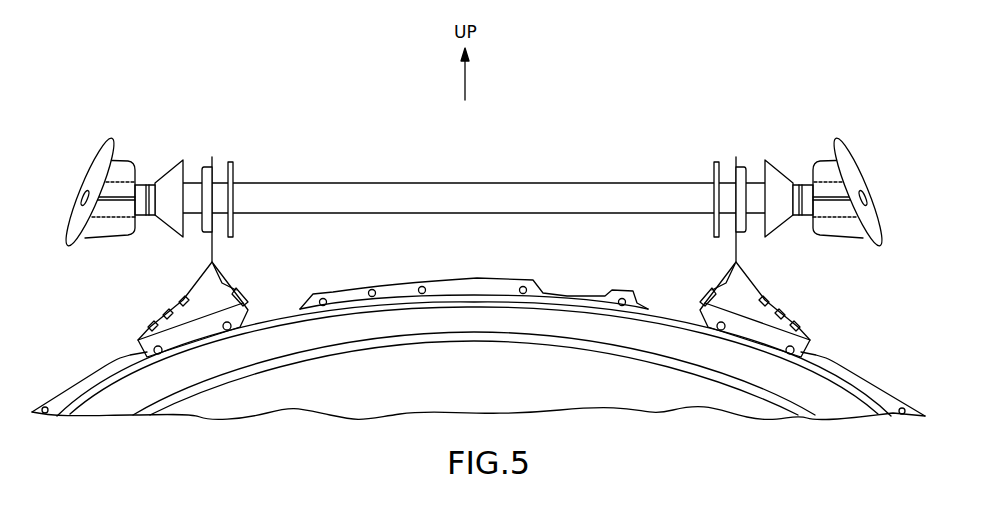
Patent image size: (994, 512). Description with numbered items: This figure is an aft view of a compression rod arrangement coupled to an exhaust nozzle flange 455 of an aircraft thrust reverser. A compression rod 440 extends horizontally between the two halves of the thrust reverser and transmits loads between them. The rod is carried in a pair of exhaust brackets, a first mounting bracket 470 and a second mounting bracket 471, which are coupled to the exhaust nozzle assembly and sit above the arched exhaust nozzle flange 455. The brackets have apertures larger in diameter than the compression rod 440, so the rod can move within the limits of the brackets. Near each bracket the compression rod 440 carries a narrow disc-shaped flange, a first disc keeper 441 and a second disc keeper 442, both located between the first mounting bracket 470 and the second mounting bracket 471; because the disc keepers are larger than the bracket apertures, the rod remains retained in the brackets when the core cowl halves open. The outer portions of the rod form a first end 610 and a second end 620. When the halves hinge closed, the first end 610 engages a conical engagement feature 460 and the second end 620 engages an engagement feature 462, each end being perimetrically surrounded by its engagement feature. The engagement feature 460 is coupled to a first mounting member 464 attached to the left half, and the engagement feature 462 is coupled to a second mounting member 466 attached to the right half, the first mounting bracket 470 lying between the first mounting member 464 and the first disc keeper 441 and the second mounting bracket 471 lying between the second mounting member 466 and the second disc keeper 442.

The compression rod 440 is at (472, 200).
The first disc keeper 441 is at (231, 162).
The second disc keeper 442 is at (712, 163).
The exhaust nozzle flange 455 is at (453, 288).
The engagement feature 460 is at (168, 182).
The engagement feature 462 is at (775, 182).
The first mounting member 464 is at (98, 172).
The second mounting member 466 is at (847, 172).
The first mounting bracket 470 is at (213, 253).
The second mounting bracket 471 is at (735, 255).
The first end 610 is at (184, 137).
The second end 620 is at (762, 137).